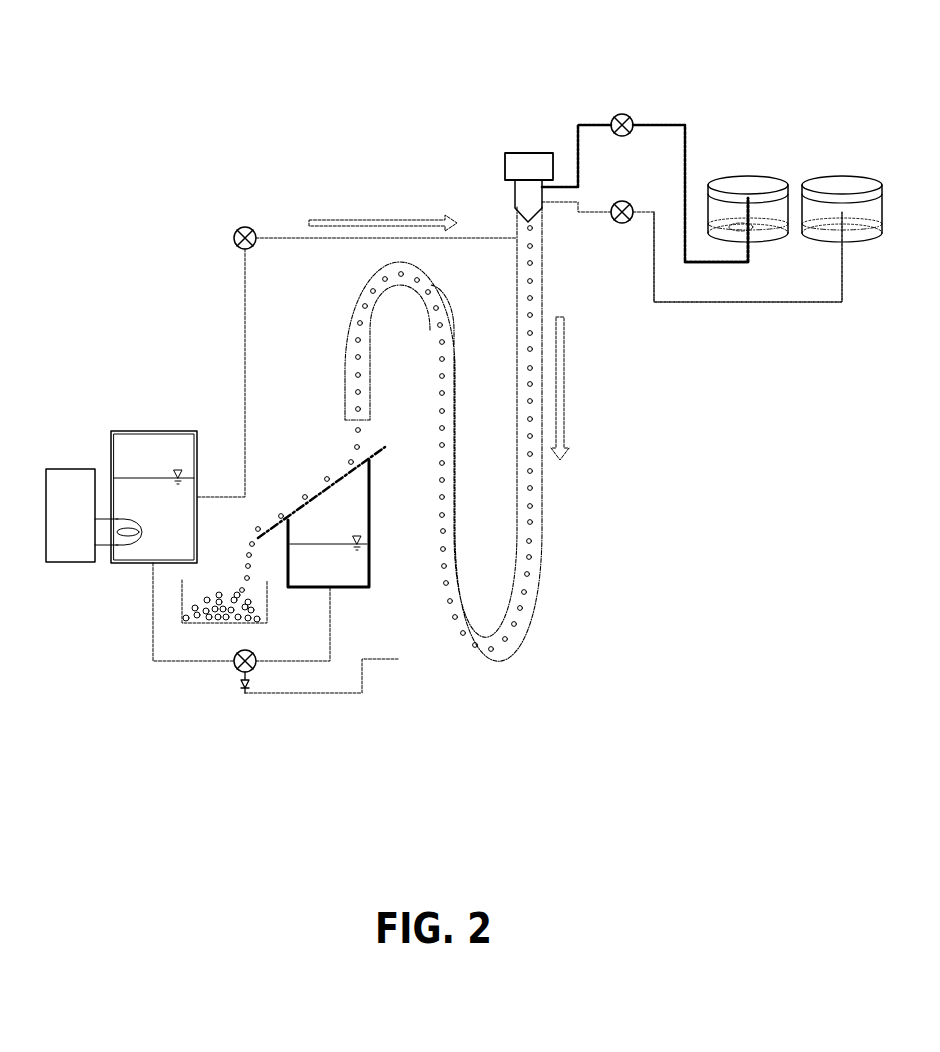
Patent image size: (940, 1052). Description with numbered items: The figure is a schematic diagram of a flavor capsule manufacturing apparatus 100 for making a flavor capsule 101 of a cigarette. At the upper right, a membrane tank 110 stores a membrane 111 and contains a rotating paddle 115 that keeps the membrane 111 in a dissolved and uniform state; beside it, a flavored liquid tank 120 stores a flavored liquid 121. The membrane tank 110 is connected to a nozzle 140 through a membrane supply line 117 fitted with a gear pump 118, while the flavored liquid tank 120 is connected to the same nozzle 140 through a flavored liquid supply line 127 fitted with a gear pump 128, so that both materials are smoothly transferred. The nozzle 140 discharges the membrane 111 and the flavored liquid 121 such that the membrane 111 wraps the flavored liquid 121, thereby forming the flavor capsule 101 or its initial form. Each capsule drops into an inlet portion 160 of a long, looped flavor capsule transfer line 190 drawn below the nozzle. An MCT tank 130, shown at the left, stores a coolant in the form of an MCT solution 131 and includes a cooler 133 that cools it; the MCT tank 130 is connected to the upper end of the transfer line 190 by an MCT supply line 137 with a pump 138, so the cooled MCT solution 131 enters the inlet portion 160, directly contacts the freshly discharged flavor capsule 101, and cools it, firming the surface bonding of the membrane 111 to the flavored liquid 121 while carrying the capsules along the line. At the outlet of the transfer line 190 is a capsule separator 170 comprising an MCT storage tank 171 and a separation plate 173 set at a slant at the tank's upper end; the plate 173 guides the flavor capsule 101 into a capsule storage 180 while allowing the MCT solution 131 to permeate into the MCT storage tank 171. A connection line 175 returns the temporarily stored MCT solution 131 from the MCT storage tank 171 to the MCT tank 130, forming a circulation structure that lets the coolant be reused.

The flavor capsule manufacturing apparatus 100 is at (450, 46).
The flavor capsule 101 is at (532, 229).
The membrane tank 110 is at (748, 175).
The membrane 111 is at (780, 212).
The rotating paddle 115 is at (757, 233).
The membrane supply line 117 is at (700, 263).
The gear pump 118 is at (629, 115).
The flavored liquid tank 120 is at (842, 175).
The flavored liquid 121 is at (872, 212).
The flavored liquid supply line 127 is at (665, 303).
The gear pump 128 is at (628, 203).
The MCT tank 130 is at (153, 431).
The MCT solution 131 is at (153, 478).
The cooler 133 is at (72, 469).
The MCT supply line 137 is at (245, 280).
The pump 138 is at (238, 230).
The nozzle 140 is at (505, 165).
The inlet portion 160 is at (522, 221).
The capsule separator 170 is at (358, 568).
The MCT storage tank 171 is at (370, 525).
The separation plate 173 is at (337, 492).
The connection line 175 is at (190, 662).
The capsule storage 180 is at (182, 601).
The flavor capsule transfer line 190 is at (543, 495).